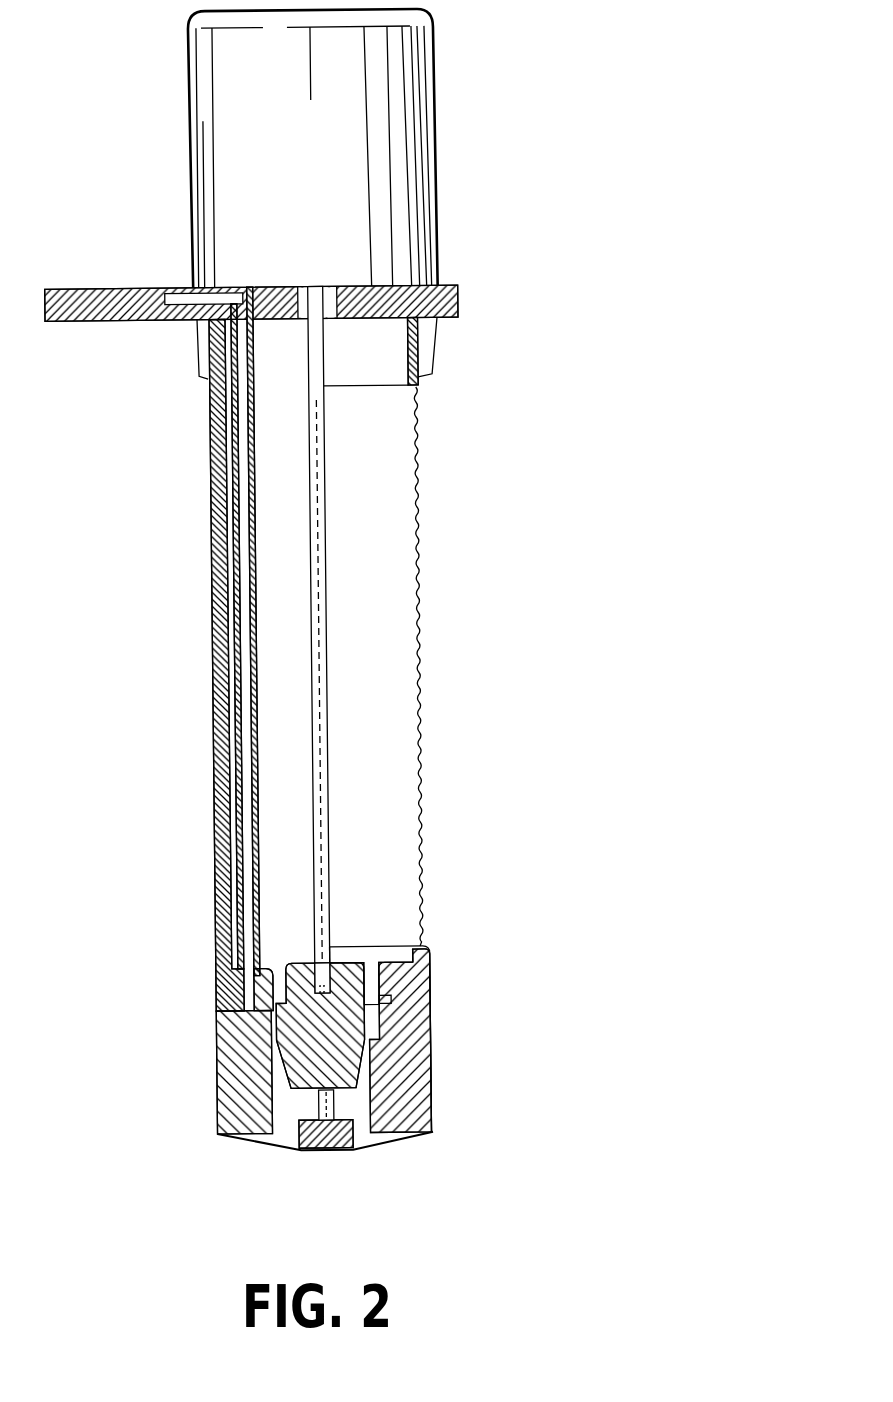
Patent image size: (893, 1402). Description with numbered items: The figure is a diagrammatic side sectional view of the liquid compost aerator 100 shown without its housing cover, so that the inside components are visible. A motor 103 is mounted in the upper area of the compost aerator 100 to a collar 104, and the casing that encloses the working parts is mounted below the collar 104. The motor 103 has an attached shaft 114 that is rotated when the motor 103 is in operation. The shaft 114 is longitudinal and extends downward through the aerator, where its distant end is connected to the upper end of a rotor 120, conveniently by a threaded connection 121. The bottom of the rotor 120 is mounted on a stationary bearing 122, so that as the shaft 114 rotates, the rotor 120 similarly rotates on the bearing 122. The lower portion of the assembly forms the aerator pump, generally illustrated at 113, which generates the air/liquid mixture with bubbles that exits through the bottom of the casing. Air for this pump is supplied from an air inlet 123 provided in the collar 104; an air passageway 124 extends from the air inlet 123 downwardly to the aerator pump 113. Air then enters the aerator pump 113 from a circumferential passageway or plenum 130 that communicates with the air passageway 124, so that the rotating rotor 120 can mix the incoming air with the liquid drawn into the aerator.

The compost aerator 100 is at (530, 160).
The motor 103 is at (441, 63).
The collar 104 is at (464, 300).
The aerator pump 113 is at (380, 940).
The shaft 114 is at (328, 470).
The rotor 120 is at (428, 970).
The threaded connection 121 is at (327, 945).
The stationary bearing 122 is at (354, 1148).
The air inlet 123 is at (184, 286).
The air passageway 124 is at (275, 286).
The plenum 130 is at (394, 1000).